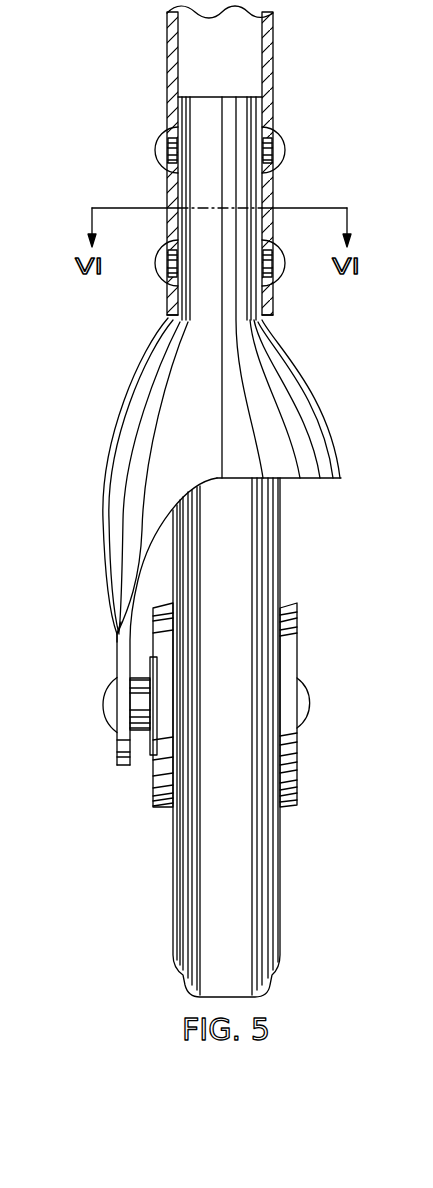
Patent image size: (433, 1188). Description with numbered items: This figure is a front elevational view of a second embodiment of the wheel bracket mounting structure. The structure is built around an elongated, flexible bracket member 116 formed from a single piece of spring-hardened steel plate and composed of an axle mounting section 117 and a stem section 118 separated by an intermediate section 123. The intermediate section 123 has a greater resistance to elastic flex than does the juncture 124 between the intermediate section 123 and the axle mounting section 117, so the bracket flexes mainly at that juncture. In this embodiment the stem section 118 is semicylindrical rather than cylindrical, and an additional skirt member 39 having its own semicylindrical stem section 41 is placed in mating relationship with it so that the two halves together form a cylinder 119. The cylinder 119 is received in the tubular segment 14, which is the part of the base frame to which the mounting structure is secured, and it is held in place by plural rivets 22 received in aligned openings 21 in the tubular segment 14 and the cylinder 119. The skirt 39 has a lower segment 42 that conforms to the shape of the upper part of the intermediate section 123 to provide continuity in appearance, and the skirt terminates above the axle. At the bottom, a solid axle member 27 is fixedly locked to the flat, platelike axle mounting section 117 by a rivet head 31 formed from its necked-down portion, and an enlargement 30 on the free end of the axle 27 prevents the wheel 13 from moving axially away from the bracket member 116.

The tubular segment 14 is at (268, 58).
The cylinder 119 is at (228, 110).
The stem section 118 is at (190, 191).
The stem section 41 is at (248, 197).
The rivets 22 is at (277, 141).
The openings 21 is at (268, 154).
The skirt member 39 is at (315, 388).
The lower segment 42 is at (320, 438).
The bracket member 116 is at (128, 395).
The intermediate section 123 is at (125, 452).
The juncture 124 is at (117, 632).
The axle mounting section 117 is at (113, 655).
The wheel 13 is at (284, 576).
The enlargement 30 is at (303, 697).
The rivet head 31 is at (110, 706).
The axle member 27 is at (138, 733).